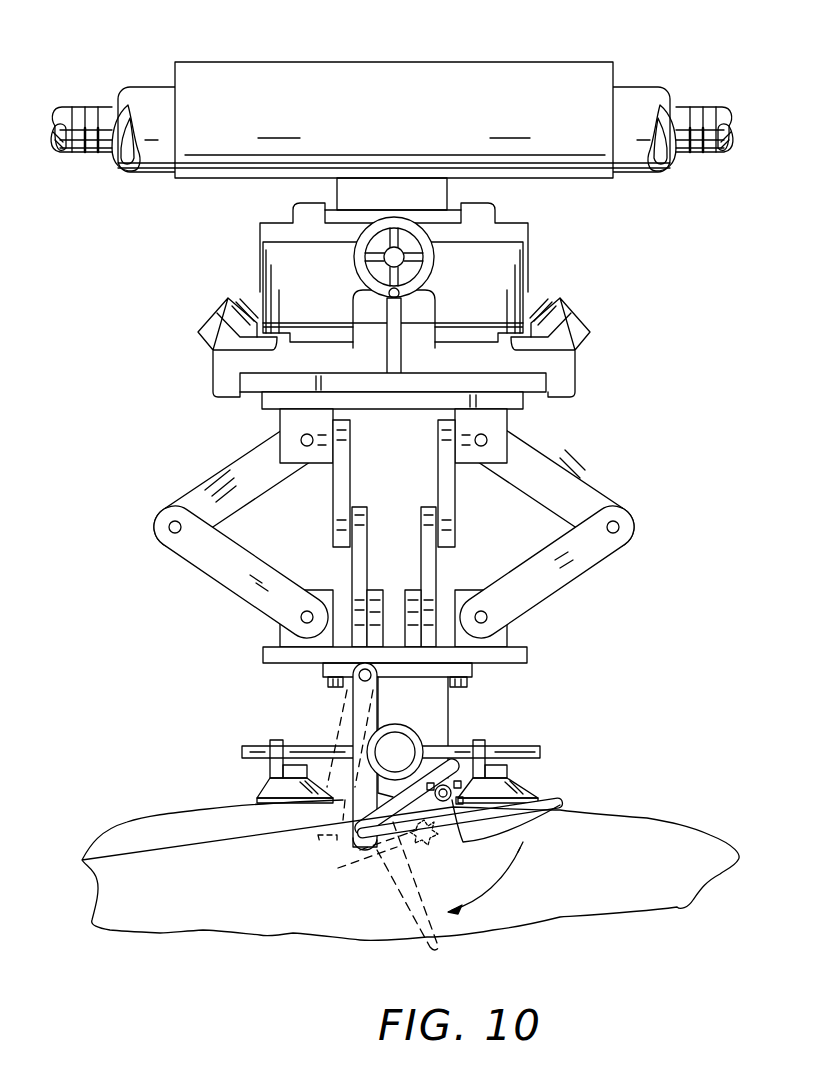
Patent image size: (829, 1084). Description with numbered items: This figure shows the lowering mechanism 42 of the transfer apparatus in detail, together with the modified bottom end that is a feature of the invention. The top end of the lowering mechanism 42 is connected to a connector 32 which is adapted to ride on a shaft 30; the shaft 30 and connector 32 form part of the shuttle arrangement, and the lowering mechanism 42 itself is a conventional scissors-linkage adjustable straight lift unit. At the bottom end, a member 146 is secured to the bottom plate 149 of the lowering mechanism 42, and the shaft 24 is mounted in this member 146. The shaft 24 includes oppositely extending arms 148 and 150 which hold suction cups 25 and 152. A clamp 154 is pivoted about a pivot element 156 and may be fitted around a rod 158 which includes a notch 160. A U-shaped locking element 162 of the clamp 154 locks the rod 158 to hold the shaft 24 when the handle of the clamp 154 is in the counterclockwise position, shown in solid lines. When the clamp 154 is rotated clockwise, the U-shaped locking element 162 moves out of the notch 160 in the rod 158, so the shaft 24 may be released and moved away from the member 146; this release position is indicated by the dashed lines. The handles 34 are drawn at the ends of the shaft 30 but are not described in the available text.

The shaft 24 is at (420, 743).
The suction cup 25 is at (273, 790).
The shaft 30 is at (150, 158).
The connector 32 is at (300, 62).
The handle 34 is at (88, 107).
The lowering mechanism 42 is at (197, 453).
The member 146 is at (440, 703).
The arm 148 is at (307, 750).
The bottom plate 149 is at (517, 651).
The arm 150 is at (500, 753).
The suction cup 152 is at (507, 788).
The clamp 154 is at (540, 810).
The pivot element 156 is at (418, 830).
The rod 158 is at (348, 820).
The notch 160 is at (343, 827).
The U-shaped locking element 162 is at (372, 843).